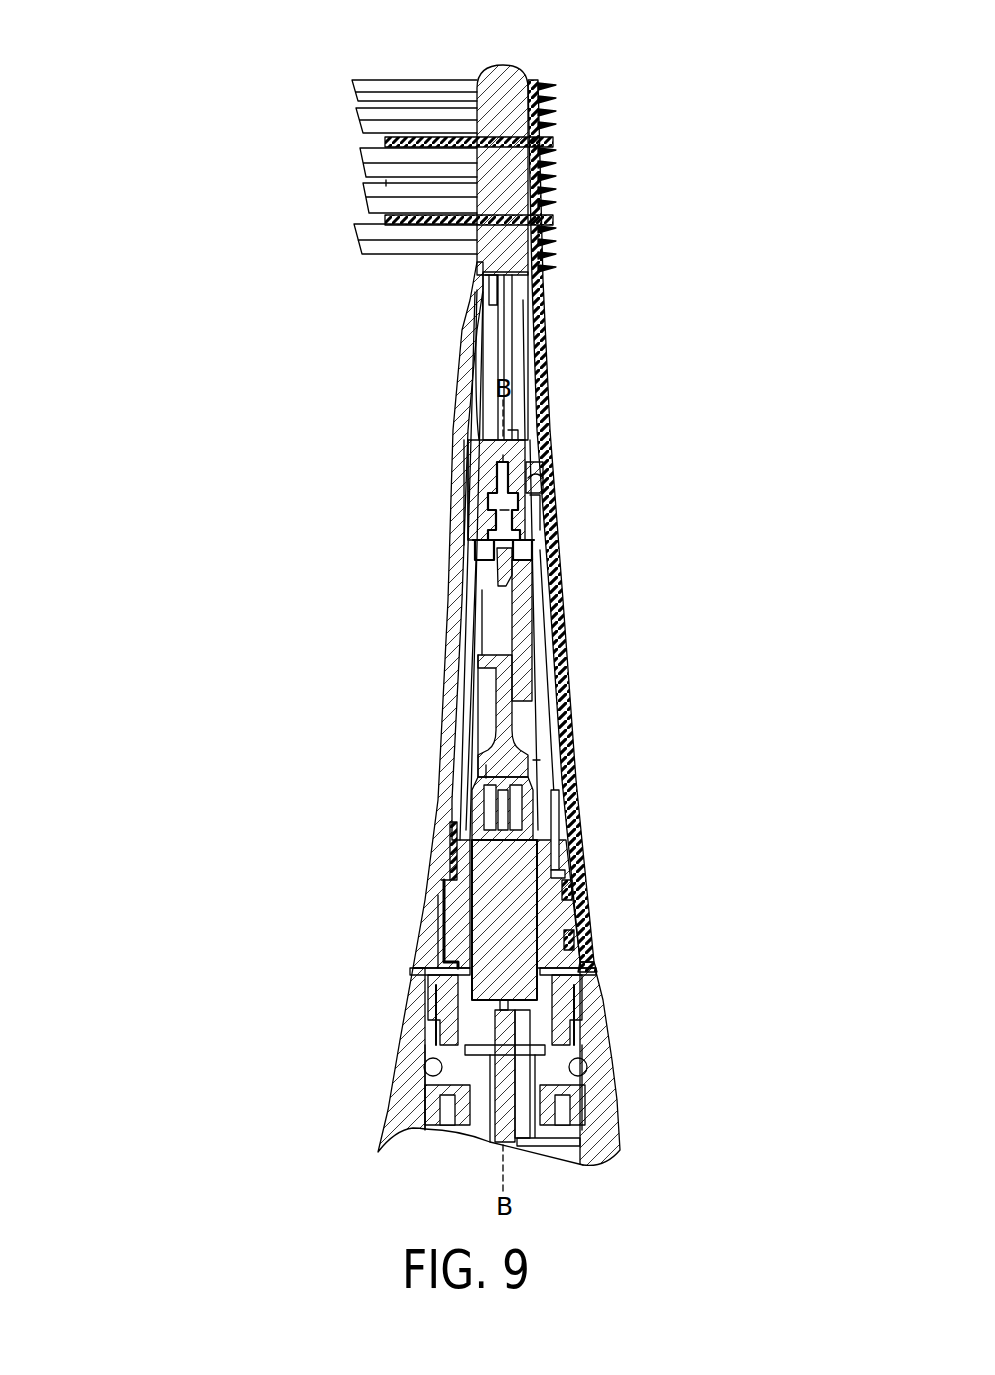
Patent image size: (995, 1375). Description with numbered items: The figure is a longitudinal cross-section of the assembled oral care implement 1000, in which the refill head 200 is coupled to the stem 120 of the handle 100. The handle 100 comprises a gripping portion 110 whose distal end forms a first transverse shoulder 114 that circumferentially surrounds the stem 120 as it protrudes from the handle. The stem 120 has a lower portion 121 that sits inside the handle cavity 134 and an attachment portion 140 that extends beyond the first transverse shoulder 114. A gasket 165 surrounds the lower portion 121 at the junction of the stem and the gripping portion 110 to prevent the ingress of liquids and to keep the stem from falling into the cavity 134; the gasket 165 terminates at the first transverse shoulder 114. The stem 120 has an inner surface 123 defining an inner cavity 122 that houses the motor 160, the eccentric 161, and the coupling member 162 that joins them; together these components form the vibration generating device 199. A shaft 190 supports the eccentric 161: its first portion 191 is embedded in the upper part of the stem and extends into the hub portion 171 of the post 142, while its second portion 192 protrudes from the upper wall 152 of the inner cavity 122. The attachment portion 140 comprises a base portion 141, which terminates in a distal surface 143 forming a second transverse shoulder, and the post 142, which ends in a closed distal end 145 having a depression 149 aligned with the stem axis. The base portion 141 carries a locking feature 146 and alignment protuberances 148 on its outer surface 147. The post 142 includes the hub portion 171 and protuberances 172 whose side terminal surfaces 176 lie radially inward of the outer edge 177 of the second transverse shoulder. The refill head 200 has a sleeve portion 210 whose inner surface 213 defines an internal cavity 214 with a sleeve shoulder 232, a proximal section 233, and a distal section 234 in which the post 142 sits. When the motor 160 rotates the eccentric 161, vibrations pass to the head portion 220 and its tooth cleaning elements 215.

The oral care implement 1000 is at (130, 158).
The handle 100 is at (628, 1143).
The gripping portion 110 is at (408, 1105).
The first transverse shoulder 114 is at (585, 966).
The stem 120 is at (440, 775).
The lower portion 121 is at (440, 1030).
The inner cavity 122 is at (480, 590).
The inner surface 123 is at (486, 770).
The handle cavity 134 is at (430, 1130).
The attachment portion 140 is at (448, 858).
The base portion 141 is at (558, 870).
The post 142 is at (534, 464).
The distal surface 143 is at (548, 480).
The closed distal end 145 is at (477, 430).
The locking feature 146 is at (552, 920).
The outer surface 147 is at (556, 846).
The alignment protuberance 148 is at (455, 910).
The depression 149 is at (512, 395).
The upper wall 152 is at (480, 548).
The motor 160 is at (505, 962).
The eccentric 161 is at (522, 606).
The coupling member 162 is at (506, 762).
The gasket 165 is at (565, 1030).
The hub portion 171 is at (513, 440).
The protuberance 172 is at (485, 480).
The side terminal surface 176 is at (468, 455).
The outer edge 177 is at (466, 490).
The shaft 190 is at (506, 515).
The first portion 191 is at (514, 460).
The second portion 192 is at (506, 557).
The vibration generating device 199 is at (532, 770).
The refill head 200 is at (433, 830).
The sleeve portion 210 is at (455, 665).
The inner surface 213 is at (548, 700).
The internal cavity 214 is at (478, 698).
The tooth cleaning elements 215 is at (355, 135).
The head portion 220 is at (502, 87).
The sleeve shoulder 232 is at (542, 507).
The proximal section 233 is at (548, 648).
The distal section 234 is at (497, 345).